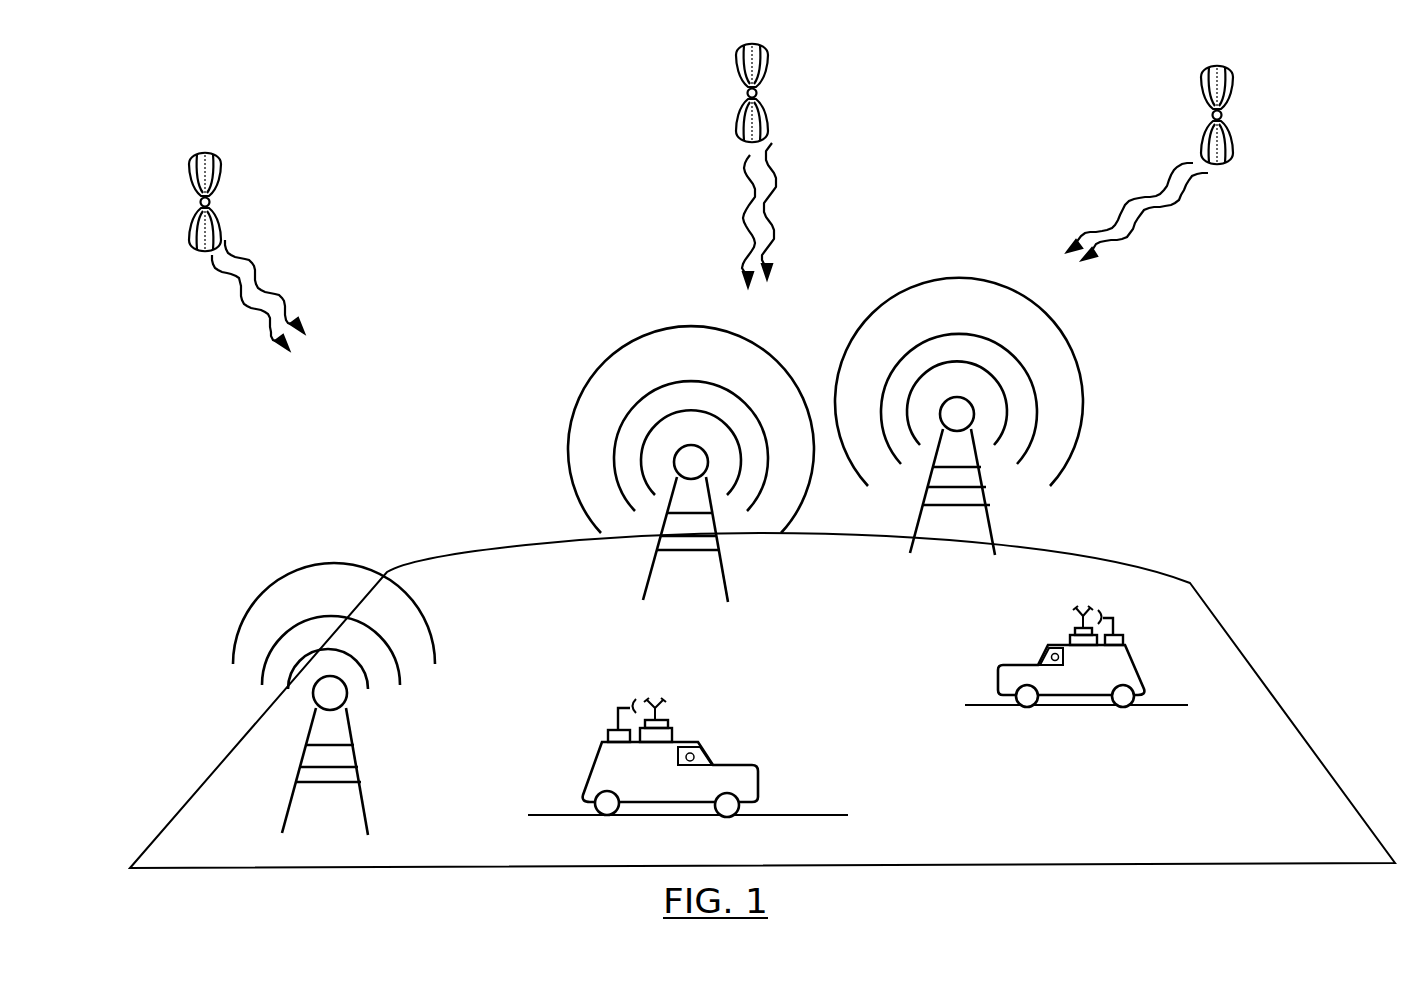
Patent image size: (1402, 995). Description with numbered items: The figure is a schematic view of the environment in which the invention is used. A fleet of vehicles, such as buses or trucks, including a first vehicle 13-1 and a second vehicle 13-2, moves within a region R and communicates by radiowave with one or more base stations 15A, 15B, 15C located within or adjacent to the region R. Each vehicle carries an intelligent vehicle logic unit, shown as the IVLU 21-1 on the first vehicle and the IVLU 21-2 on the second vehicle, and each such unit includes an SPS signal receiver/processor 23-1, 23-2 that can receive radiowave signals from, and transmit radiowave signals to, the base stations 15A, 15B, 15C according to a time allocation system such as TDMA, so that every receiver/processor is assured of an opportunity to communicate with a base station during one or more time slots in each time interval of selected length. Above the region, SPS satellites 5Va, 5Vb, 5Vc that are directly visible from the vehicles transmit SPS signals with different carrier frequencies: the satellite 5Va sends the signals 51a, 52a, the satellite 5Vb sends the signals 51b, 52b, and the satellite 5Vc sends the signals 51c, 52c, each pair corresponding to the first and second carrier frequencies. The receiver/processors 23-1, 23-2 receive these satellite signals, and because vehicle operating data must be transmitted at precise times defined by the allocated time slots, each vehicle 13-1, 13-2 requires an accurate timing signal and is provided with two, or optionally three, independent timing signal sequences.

The SPS satellite 5Va is at (225, 162).
The SPS satellite 5Vb is at (767, 102).
The SPS satellite 5Vc is at (1225, 113).
The SPS signal 51a is at (222, 257).
The SPS signal 52a is at (240, 250).
The SPS signal 51b is at (746, 183).
The SPS signal 52b is at (766, 210).
The SPS signal 51c is at (1165, 192).
The SPS signal 52c is at (1190, 183).
The base station 15A is at (330, 693).
The base station 15B is at (691, 462).
The base station 15C is at (957, 414).
The vehicle 13-1 is at (717, 785).
The vehicle 13-2 is at (1118, 665).
The intelligent vehicle logic unit 21-1 is at (679, 692).
The intelligent vehicle logic unit 21-2 is at (1054, 604).
The SPS signal receiver/processor 23-1 is at (662, 735).
The SPS signal receiver/processor 23-2 is at (1078, 640).
The region R is at (1150, 578).